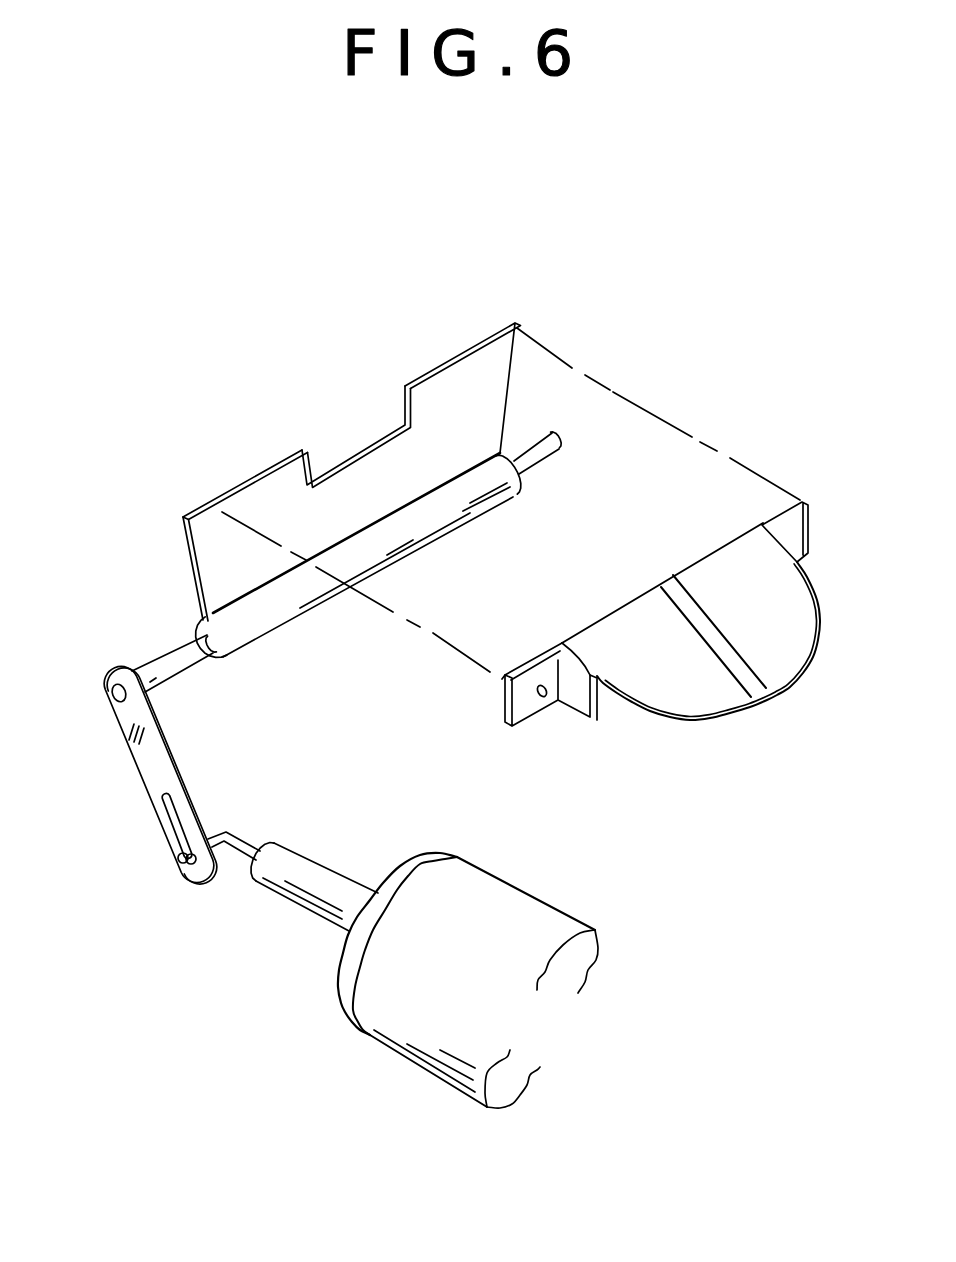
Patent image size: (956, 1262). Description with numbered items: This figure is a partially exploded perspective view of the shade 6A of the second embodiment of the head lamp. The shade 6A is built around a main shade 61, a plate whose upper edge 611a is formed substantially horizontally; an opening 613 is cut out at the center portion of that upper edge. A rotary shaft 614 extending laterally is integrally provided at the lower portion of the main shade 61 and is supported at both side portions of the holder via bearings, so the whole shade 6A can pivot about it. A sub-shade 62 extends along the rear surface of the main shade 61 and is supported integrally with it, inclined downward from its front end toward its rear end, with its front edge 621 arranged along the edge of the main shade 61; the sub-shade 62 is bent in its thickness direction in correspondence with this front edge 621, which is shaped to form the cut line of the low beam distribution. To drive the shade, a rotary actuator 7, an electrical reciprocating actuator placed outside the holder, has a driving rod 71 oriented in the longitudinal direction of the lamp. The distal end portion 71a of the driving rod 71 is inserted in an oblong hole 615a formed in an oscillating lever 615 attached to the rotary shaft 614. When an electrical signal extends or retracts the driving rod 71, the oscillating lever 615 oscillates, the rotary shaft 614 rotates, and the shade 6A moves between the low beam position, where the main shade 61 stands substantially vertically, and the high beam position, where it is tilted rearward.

The shade 6A is at (629, 362).
The main shade 61 is at (322, 490).
The upper edge 611a is at (242, 482).
The opening 613 is at (366, 438).
The rotary shaft 614 is at (173, 677).
The oscillating lever 615 is at (134, 775).
The oblong hole 615a is at (167, 825).
The sub-shade 62 is at (662, 643).
The front edge 621 is at (643, 590).
The rotary actuator 7 is at (403, 938).
The driving rod 71 is at (290, 883).
The distal end portion 71a is at (222, 833).